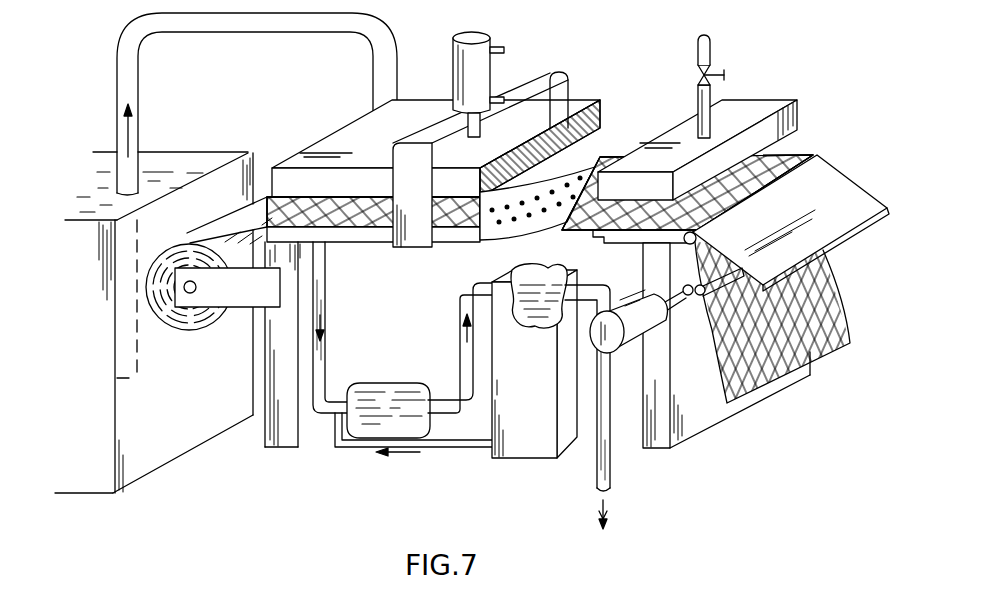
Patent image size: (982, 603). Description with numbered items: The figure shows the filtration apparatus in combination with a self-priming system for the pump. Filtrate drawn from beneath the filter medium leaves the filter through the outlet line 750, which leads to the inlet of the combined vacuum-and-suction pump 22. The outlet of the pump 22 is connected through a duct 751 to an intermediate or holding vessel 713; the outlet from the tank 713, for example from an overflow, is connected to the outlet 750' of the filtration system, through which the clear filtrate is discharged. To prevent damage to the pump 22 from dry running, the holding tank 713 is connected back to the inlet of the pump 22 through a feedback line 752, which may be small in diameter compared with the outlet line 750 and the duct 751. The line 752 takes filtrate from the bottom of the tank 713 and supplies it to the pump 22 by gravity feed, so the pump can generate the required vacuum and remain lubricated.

The outlet line 750 is at (352, 327).
The duct 751 is at (458, 316).
The feedback line 752 is at (447, 449).
The vacuum-suction pump 22 is at (405, 405).
The holding vessel 713 is at (527, 423).
The outlet 750' is at (624, 407).